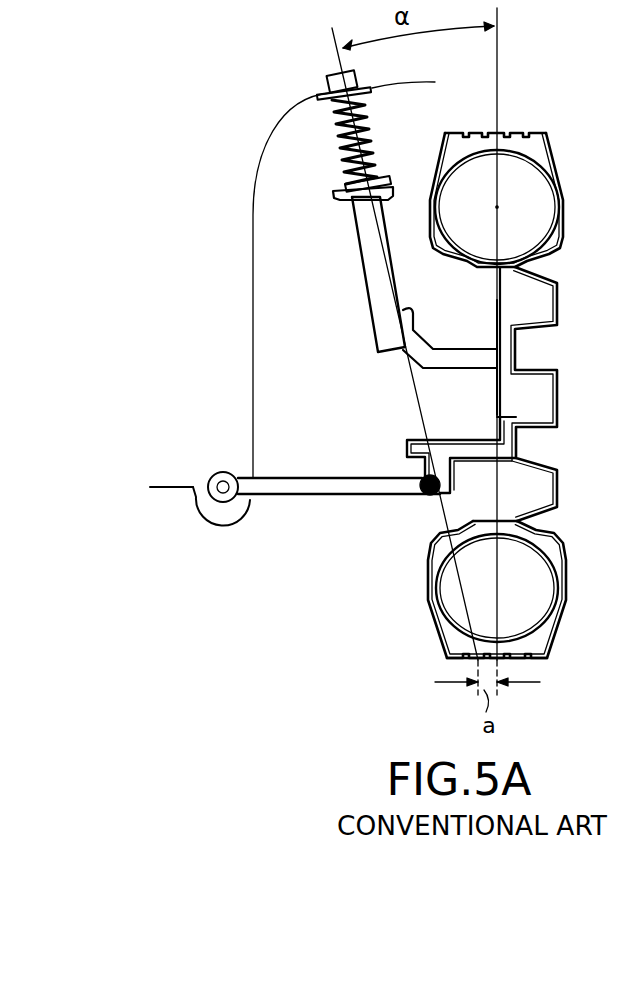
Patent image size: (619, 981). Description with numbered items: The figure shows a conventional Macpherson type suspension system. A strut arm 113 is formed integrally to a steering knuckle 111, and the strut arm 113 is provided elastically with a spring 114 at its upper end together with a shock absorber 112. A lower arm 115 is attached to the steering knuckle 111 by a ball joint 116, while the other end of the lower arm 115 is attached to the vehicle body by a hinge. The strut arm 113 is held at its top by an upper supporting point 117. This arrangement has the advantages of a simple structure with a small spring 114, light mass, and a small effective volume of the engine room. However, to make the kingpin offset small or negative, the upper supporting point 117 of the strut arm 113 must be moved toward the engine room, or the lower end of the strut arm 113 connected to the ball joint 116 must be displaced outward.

The steering knuckle 111 is at (458, 356).
The shock absorber 112 is at (382, 300).
The strut arm 113 is at (349, 236).
The spring 114 is at (372, 138).
The lower arm 115 is at (297, 491).
The ball joint 116 is at (424, 497).
The upper supporting point 117 is at (328, 82).